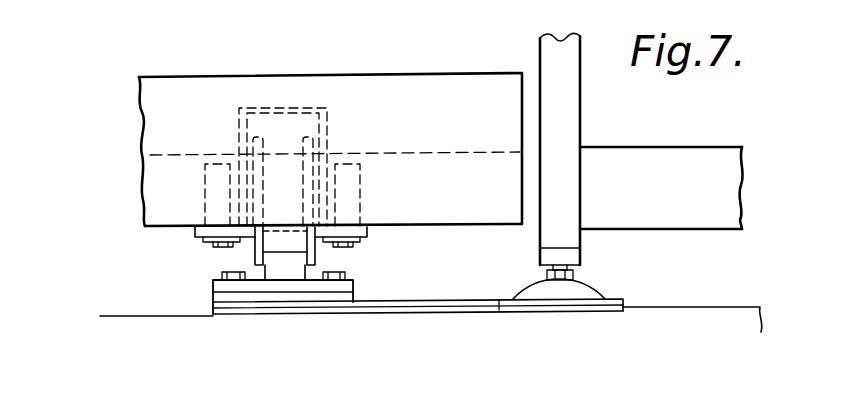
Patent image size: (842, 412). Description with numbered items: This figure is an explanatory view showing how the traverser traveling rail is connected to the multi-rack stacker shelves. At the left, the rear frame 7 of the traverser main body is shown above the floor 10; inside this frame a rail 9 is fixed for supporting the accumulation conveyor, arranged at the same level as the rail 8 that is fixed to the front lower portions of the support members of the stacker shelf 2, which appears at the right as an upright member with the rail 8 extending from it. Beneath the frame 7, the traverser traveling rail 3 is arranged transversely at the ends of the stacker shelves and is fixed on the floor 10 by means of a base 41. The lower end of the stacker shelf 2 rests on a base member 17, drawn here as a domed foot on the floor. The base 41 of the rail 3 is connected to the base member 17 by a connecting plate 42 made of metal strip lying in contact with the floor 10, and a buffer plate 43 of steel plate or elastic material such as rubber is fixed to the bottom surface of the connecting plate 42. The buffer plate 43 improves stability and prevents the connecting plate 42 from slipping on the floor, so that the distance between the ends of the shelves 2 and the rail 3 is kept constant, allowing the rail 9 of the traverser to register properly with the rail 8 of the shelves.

The rear frame 7 is at (202, 90).
The rail 9 is at (468, 160).
The traverser traveling rail 3 is at (283, 270).
The base 41 is at (353, 292).
The connecting plate 42 is at (478, 300).
The buffer plate 43 is at (437, 308).
The multi-rack stacker shelf 2 is at (580, 108).
The base member 17 is at (592, 292).
The rail 8 is at (697, 148).
The floor 10 is at (155, 314).